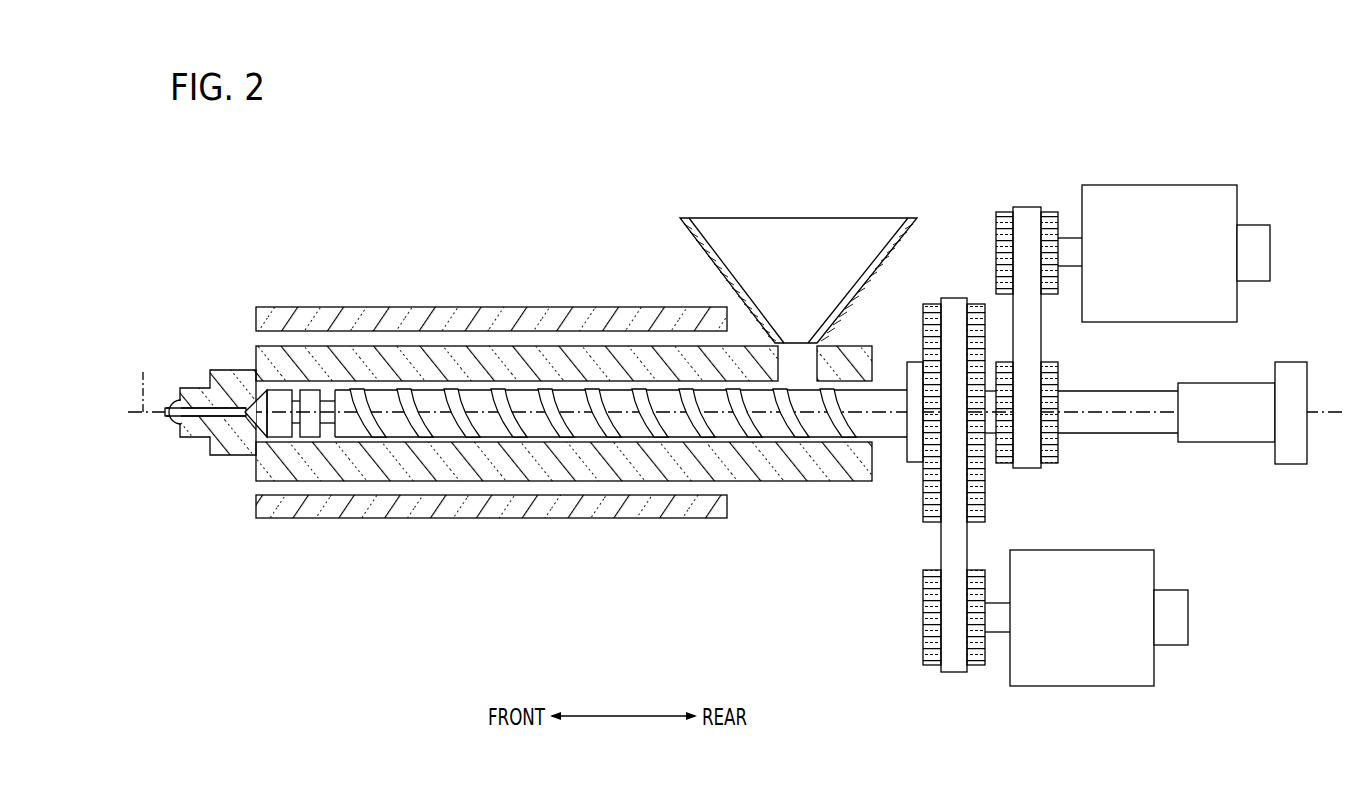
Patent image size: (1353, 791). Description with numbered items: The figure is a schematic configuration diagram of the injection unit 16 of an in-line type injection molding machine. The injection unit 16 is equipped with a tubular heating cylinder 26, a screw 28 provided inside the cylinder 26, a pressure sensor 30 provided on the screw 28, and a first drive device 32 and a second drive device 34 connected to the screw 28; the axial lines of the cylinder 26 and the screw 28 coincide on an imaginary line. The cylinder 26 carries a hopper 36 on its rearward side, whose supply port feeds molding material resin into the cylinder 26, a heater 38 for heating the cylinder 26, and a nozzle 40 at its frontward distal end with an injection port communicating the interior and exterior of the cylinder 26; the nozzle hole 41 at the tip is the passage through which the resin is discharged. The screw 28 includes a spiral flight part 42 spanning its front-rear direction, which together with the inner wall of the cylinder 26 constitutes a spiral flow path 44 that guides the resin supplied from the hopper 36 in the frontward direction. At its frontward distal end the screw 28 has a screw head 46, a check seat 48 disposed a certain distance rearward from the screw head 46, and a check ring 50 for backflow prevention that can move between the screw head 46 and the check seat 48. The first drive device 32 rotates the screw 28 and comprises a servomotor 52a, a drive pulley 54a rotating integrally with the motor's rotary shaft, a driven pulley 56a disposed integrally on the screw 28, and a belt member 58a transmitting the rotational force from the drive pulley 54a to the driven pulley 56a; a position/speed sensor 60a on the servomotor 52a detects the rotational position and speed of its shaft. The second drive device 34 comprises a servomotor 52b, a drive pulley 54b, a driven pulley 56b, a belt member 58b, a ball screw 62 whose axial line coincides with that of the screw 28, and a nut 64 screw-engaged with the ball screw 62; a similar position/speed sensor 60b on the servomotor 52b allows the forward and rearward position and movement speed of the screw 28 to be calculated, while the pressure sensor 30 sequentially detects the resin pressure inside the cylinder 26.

The injection unit 16 is at (541, 184).
The heating cylinder 26 is at (446, 362).
The screw 28 is at (492, 428).
The pressure sensor 30 is at (1293, 381).
The first drive device 32 is at (1031, 512).
The second drive device 34 is at (1118, 298).
The hopper 36 is at (695, 236).
The heater 38 is at (338, 306).
The nozzle 40 is at (166, 398).
The nozzle hole 41 is at (176, 426).
The flight part 42 is at (693, 422).
The spiral flow path 44 is at (585, 440).
The screw head 46 is at (262, 421).
The check seat 48 is at (342, 422).
The check ring 50 is at (311, 428).
The servomotor 52a is at (1105, 550).
The servomotor 52b is at (1187, 185).
The drive pulley 54a is at (923, 632).
The drive pulley 54b is at (1050, 210).
The driven pulley 56a is at (923, 494).
The driven pulley 56b is at (1055, 380).
The belt member 58a is at (954, 673).
The belt member 58b is at (1027, 207).
The position/speed sensor 60a is at (1177, 607).
The position/speed sensor 60b is at (1257, 243).
The ball screw 62 is at (1133, 425).
The nut 64 is at (1218, 435).